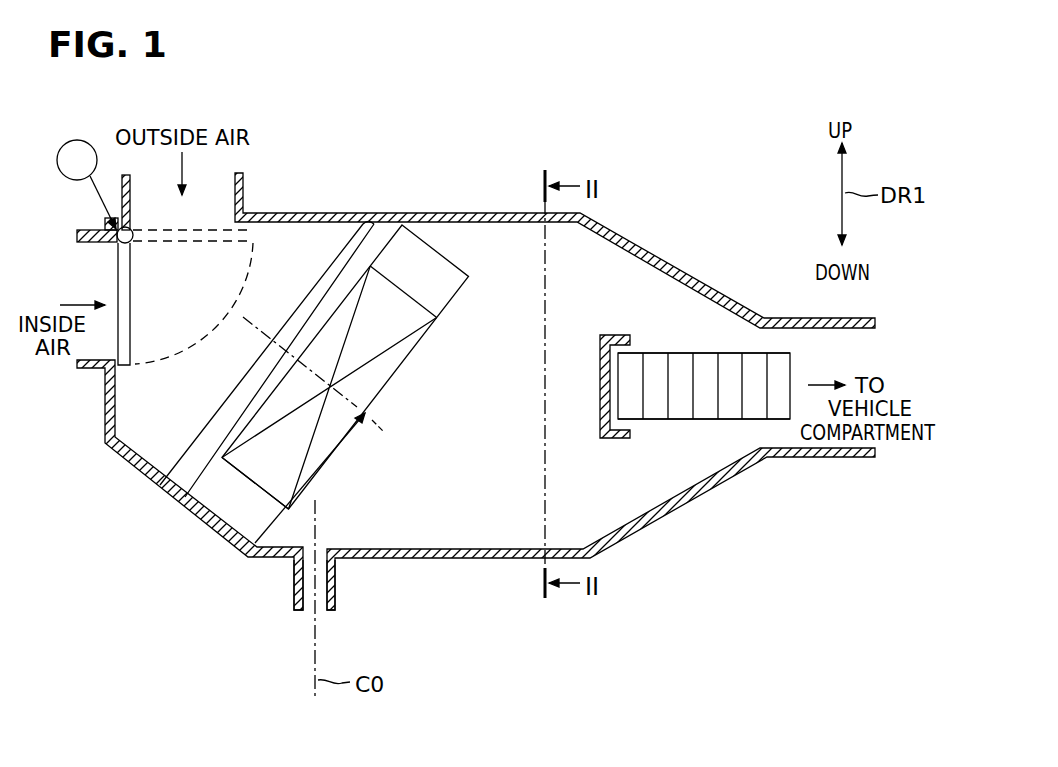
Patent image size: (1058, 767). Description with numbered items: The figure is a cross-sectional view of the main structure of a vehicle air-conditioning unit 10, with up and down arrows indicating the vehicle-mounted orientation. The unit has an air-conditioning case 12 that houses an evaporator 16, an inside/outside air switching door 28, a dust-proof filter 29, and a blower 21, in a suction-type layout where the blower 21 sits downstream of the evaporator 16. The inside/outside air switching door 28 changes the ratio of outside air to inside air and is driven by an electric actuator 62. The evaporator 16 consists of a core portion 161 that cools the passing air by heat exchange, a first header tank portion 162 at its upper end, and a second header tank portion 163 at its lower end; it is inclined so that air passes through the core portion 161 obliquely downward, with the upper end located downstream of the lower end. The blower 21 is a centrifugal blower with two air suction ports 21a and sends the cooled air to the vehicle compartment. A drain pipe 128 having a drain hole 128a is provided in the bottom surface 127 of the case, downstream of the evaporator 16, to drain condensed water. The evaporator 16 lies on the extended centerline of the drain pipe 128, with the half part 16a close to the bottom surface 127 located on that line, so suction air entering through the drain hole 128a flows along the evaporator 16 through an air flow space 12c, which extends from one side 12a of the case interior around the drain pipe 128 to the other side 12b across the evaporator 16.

The vehicle air-conditioning unit 10 is at (609, 141).
The air-conditioning case 12 is at (458, 213).
The one side of the inner part of the air-conditioning case 12a is at (250, 556).
The other side of the inner part of the air-conditioning case 12b is at (476, 224).
The air flow space 12c is at (365, 442).
The evaporator 16 is at (345, 293).
The half part of the evaporator 16a is at (328, 468).
The core portion 161 is at (400, 360).
The first header tank portion 162 is at (417, 253).
The second header tank portion 163 is at (213, 503).
The blower 21 is at (700, 362).
The air suction port 21a is at (714, 342).
The inside/outside air switching door 28 is at (118, 262).
The dust-proof filter 29 is at (322, 274).
The electric actuator 62 is at (77, 140).
The bottom surface 127 is at (438, 550).
The drain pipe 128 is at (294, 600).
The drain hole 128a is at (310, 595).